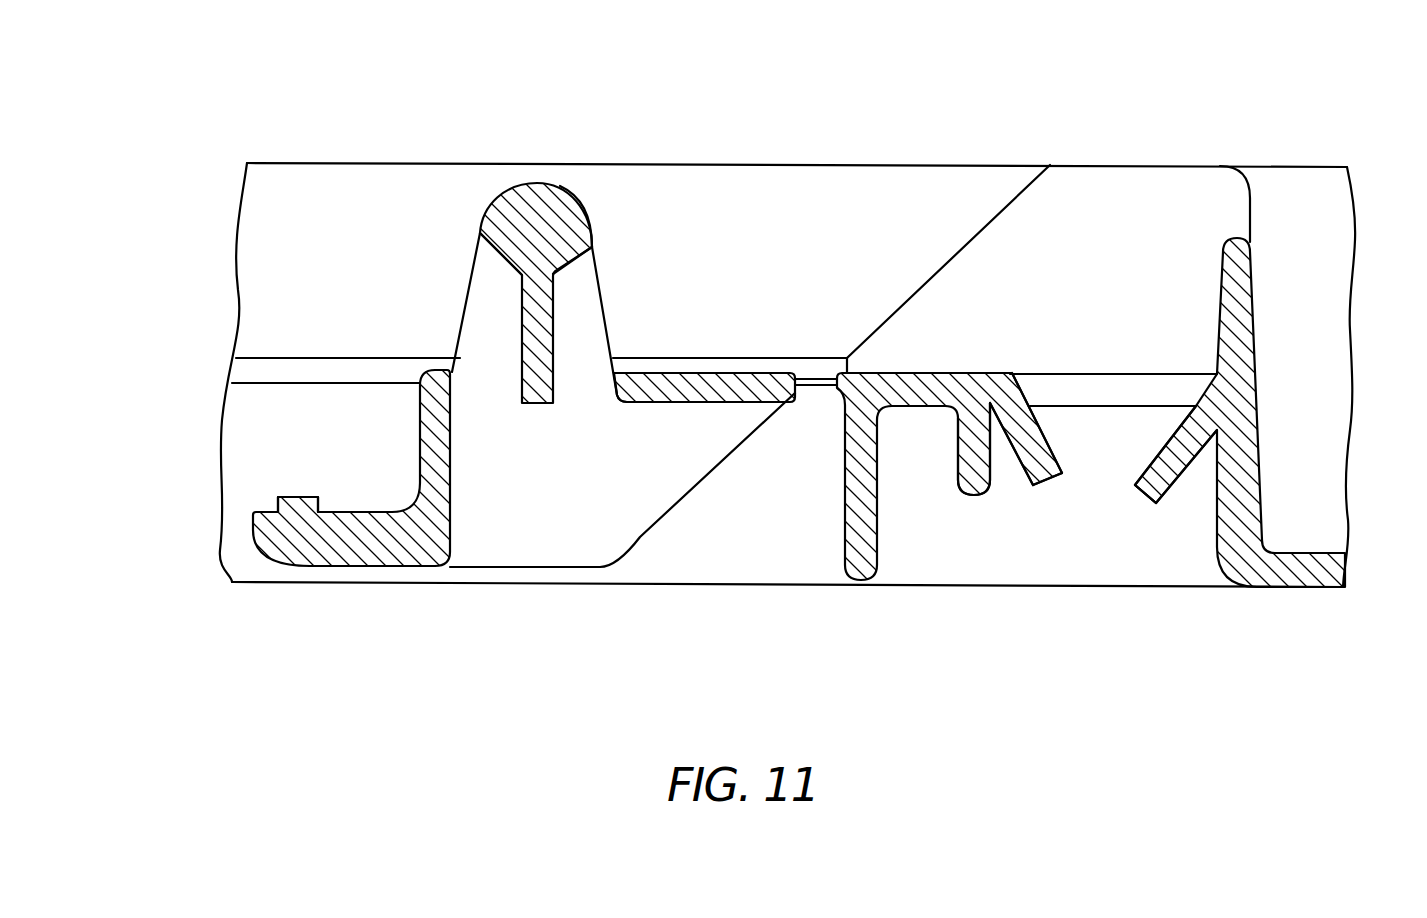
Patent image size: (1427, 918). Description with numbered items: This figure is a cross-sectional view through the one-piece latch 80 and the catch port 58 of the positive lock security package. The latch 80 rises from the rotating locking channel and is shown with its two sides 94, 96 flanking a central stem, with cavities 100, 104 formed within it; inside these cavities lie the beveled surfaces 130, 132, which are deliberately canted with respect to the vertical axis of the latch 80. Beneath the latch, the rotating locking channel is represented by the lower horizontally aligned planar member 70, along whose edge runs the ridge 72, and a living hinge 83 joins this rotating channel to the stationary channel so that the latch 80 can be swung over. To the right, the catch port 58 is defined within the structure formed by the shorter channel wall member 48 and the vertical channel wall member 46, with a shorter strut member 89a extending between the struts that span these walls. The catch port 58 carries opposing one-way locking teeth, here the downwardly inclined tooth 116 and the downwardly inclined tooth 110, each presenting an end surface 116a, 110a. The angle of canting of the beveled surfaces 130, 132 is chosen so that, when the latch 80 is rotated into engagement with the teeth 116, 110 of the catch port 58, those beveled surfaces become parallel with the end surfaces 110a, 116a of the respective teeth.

The latch 80 is at (586, 150).
The side 96 is at (480, 235).
The beveled surface 130 is at (503, 259).
The cavity 104 is at (486, 298).
The side 94 is at (597, 253).
The beveled surface 132 is at (598, 273).
The cavity 100 is at (587, 325).
The catch port 58 is at (1100, 420).
The ridge 72 is at (300, 497).
The lower horizontally aligned planar member 70 is at (254, 530).
The living hinge 83 is at (818, 388).
The shorter channel wall member 48 is at (847, 530).
The shorter strut member 89a is at (958, 460).
The tooth 116 is at (1027, 468).
The end surface 116a is at (1043, 480).
The end surface 110a is at (1145, 492).
The tooth 110 is at (1168, 474).
The vertical channel wall member 46 is at (1250, 475).